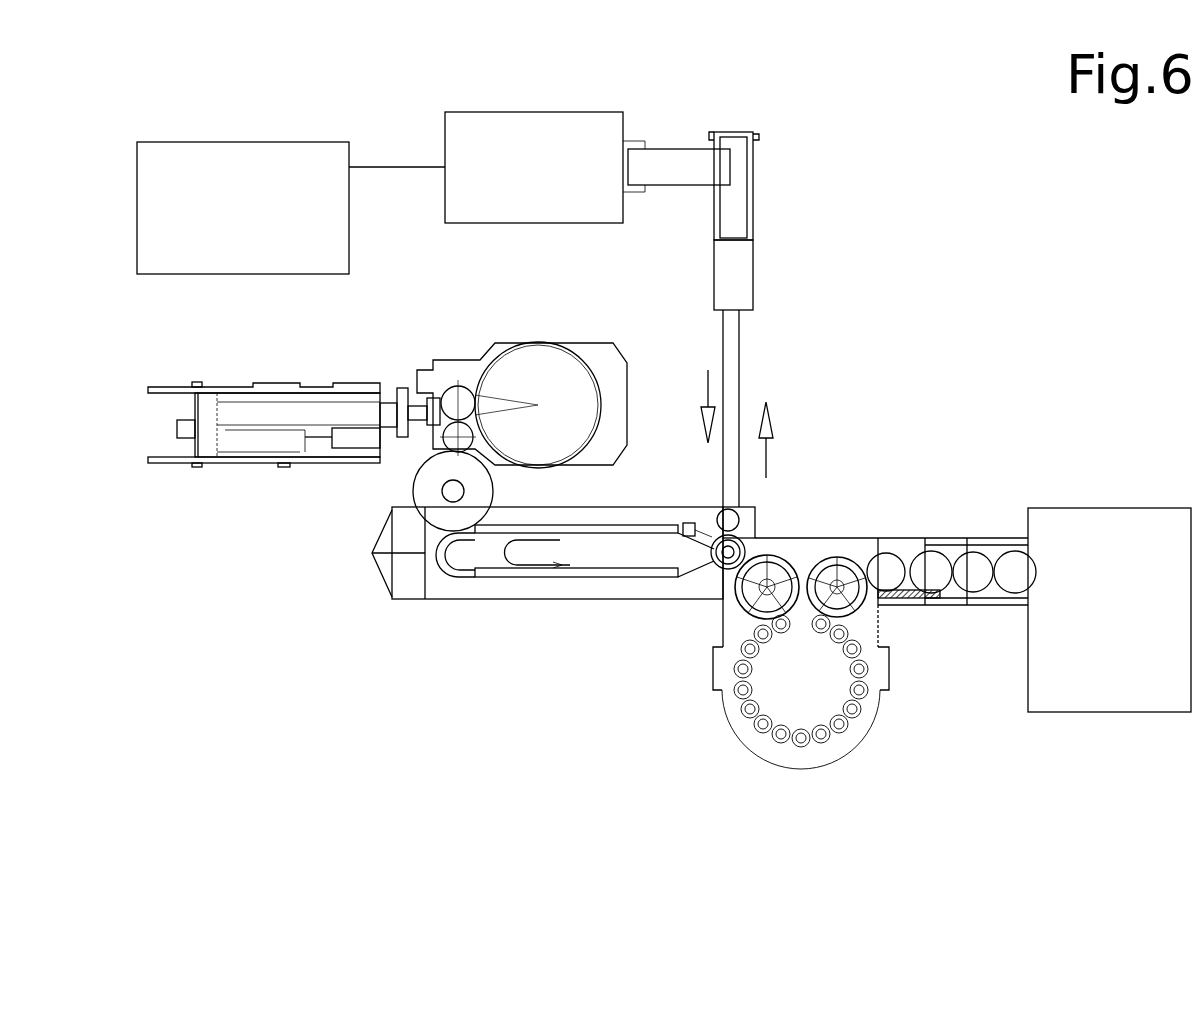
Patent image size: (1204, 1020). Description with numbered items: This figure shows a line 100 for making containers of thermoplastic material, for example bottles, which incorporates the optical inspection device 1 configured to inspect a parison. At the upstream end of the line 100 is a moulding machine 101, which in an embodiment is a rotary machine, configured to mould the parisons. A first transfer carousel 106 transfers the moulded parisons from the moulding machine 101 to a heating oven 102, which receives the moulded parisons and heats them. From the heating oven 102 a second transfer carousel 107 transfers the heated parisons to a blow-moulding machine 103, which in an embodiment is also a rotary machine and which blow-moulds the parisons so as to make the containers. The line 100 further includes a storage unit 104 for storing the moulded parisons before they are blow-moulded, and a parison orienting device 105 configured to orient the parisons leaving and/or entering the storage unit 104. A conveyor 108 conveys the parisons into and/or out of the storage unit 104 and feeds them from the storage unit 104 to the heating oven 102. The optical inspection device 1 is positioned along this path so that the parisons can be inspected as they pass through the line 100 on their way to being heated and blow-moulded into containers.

The line 100 is at (962, 274).
The optical inspection device 1 is at (685, 516).
The moulding machine 101 is at (474, 344).
The heating oven 102 is at (438, 592).
The blow-moulding machine 103 is at (893, 726).
The storage unit 104 is at (291, 208).
The parison orienting device 105 is at (534, 167).
The first transfer carousel 106 is at (411, 491).
The second transfer carousel 107 is at (798, 545).
The conveyor 108 is at (739, 343).